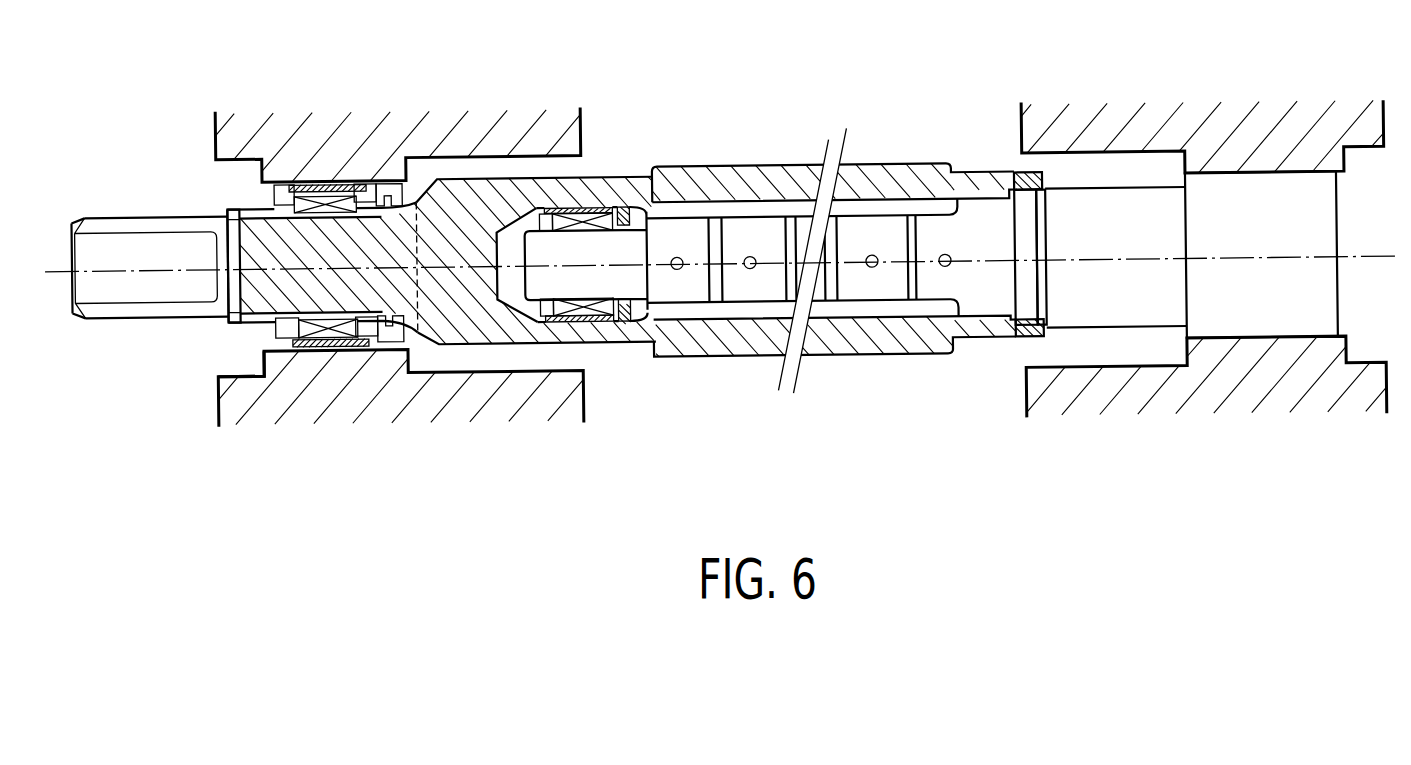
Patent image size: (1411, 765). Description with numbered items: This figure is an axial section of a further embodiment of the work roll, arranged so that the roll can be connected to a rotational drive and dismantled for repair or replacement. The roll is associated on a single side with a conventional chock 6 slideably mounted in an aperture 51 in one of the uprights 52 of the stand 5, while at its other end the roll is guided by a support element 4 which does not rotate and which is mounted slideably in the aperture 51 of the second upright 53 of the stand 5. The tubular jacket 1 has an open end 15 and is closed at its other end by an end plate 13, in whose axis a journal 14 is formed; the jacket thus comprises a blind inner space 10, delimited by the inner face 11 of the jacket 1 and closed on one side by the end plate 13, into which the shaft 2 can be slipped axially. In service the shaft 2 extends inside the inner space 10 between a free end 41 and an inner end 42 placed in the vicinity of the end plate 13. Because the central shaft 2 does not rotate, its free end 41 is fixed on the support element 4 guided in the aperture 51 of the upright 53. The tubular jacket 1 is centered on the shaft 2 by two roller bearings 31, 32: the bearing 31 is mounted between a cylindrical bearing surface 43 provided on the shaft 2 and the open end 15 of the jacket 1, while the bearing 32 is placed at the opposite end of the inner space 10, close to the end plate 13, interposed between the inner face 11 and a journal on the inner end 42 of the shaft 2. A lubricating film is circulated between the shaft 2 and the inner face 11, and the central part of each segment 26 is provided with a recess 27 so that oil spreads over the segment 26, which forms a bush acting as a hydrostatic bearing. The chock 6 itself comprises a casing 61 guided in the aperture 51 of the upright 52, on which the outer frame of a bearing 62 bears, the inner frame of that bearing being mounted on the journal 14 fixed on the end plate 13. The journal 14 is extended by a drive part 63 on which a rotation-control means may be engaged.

The tubular jacket 1 is at (740, 178).
The shaft 2 is at (925, 240).
The support element 4 is at (1290, 209).
The stand 5 is at (272, 89).
The chock 6 is at (243, 190).
The inner space 10 is at (513, 231).
The inner face 11 is at (778, 203).
The end plate 13 is at (455, 317).
The journal 14 is at (303, 285).
The open end 15 is at (1005, 188).
The segment 26 is at (878, 292).
The recess 27 is at (750, 272).
The roller bearing 31 is at (1038, 194).
The roller bearing 32 is at (602, 204).
The free end 41 is at (1125, 218).
The inner end 42 is at (642, 215).
The cylindrical bearing surface 43 is at (1030, 308).
The aperture 51 is at (262, 334).
The upright 52 is at (232, 394).
The upright 53 is at (1342, 392).
The casing 61 is at (302, 207).
The bearing 62 is at (352, 196).
The drive part 63 is at (127, 205).